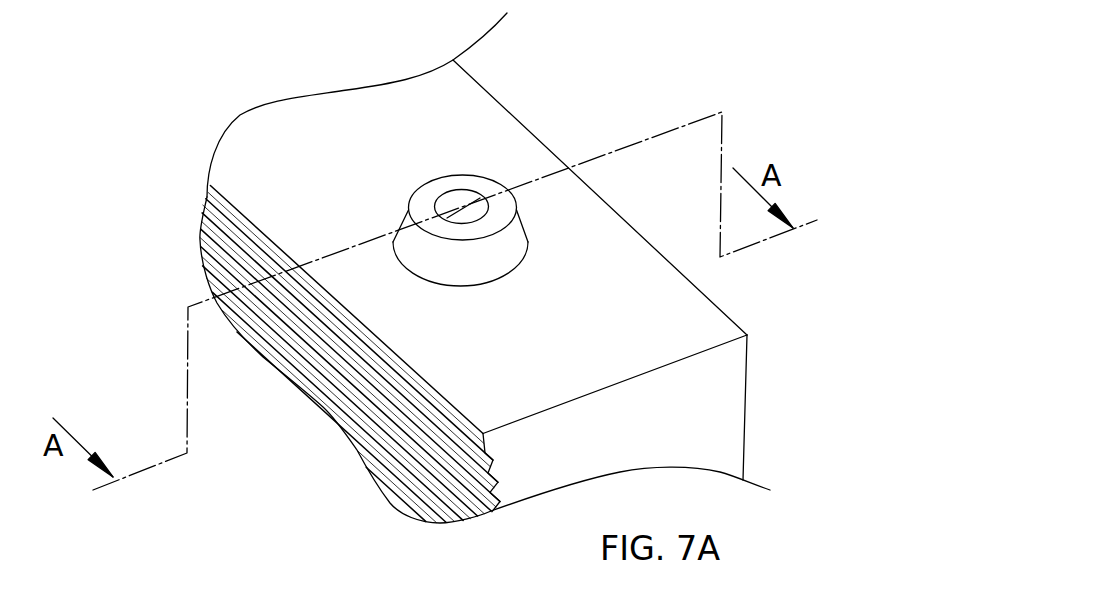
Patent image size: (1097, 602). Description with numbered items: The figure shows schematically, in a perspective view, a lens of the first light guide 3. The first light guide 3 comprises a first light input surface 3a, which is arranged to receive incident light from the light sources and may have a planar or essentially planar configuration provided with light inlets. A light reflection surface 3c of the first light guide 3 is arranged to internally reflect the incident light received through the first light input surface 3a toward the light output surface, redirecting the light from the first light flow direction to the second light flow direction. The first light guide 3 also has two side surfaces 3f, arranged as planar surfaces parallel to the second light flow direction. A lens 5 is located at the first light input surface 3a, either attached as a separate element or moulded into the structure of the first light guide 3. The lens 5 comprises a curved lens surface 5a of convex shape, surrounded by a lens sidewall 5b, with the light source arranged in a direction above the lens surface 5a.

The first light guide 3 is at (506, 268).
The first light input surface 3a is at (668, 333).
The light reflection surface 3c is at (342, 350).
The side surfaces 3f is at (685, 425).
The lens 5 is at (540, 183).
The curved lens surface 5a is at (478, 198).
The lens sidewall 5b is at (506, 192).